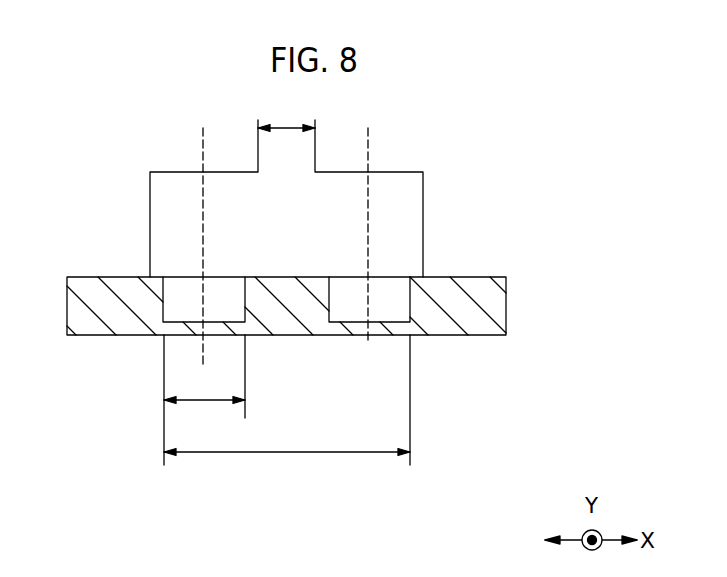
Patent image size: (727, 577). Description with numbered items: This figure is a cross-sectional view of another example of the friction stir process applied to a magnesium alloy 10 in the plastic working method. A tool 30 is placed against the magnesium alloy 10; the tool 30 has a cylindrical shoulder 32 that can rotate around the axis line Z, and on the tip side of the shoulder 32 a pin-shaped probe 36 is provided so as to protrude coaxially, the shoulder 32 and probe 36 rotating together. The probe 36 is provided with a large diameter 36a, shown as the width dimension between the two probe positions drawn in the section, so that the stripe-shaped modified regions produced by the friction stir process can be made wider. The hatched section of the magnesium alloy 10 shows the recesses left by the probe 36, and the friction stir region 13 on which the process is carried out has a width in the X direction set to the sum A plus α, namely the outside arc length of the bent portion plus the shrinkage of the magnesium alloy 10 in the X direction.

The magnesium alloy 10 is at (506, 302).
The tool 30 is at (288, 239).
The shoulder 32 is at (150, 172).
The probe 36 is at (162, 300).
The large diameter 36a is at (204, 400).
The friction stir region 13 is at (360, 453).